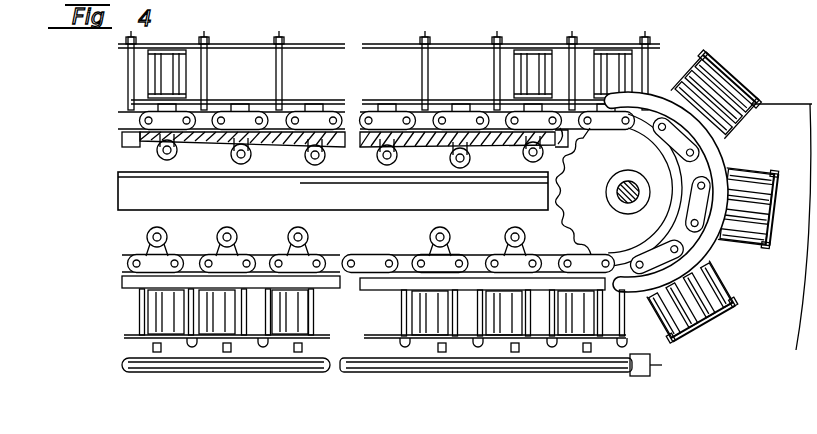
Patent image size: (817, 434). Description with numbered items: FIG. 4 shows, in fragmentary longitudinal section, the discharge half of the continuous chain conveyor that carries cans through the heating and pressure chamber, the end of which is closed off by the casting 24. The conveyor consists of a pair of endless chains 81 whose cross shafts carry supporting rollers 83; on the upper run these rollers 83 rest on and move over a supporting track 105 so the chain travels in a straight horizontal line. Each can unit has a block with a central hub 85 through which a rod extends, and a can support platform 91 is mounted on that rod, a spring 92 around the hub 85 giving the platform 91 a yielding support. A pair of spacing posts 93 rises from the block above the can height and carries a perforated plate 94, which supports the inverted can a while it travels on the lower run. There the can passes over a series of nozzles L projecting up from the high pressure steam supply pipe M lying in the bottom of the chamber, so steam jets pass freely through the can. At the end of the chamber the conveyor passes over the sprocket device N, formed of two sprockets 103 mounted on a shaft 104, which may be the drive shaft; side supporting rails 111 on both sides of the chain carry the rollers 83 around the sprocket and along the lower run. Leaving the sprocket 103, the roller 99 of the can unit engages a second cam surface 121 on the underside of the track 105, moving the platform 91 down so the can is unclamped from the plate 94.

The perforated plate 94 is at (244, 46).
The spacing posts 93 is at (206, 80).
The spring 92 is at (240, 104).
The can support platform 91 is at (252, 104).
The endless chains 81 is at (317, 118).
The supporting rollers 83 is at (311, 112).
The roller 99 is at (234, 153).
The supporting track 105 is at (287, 146).
The second cam surface 121 is at (504, 139).
The shaft 104 is at (628, 172).
The sprockets 103 is at (670, 173).
The side supporting rails 111 is at (703, 246).
The casting 24 is at (778, 112).
The central hub 85 is at (432, 257).
The bobbin c is at (171, 60).
The can a is at (534, 58).
The sprocket device N is at (644, 227).
The high pressure steam supply pipe M is at (122, 362).
The nozzles L is at (303, 355).